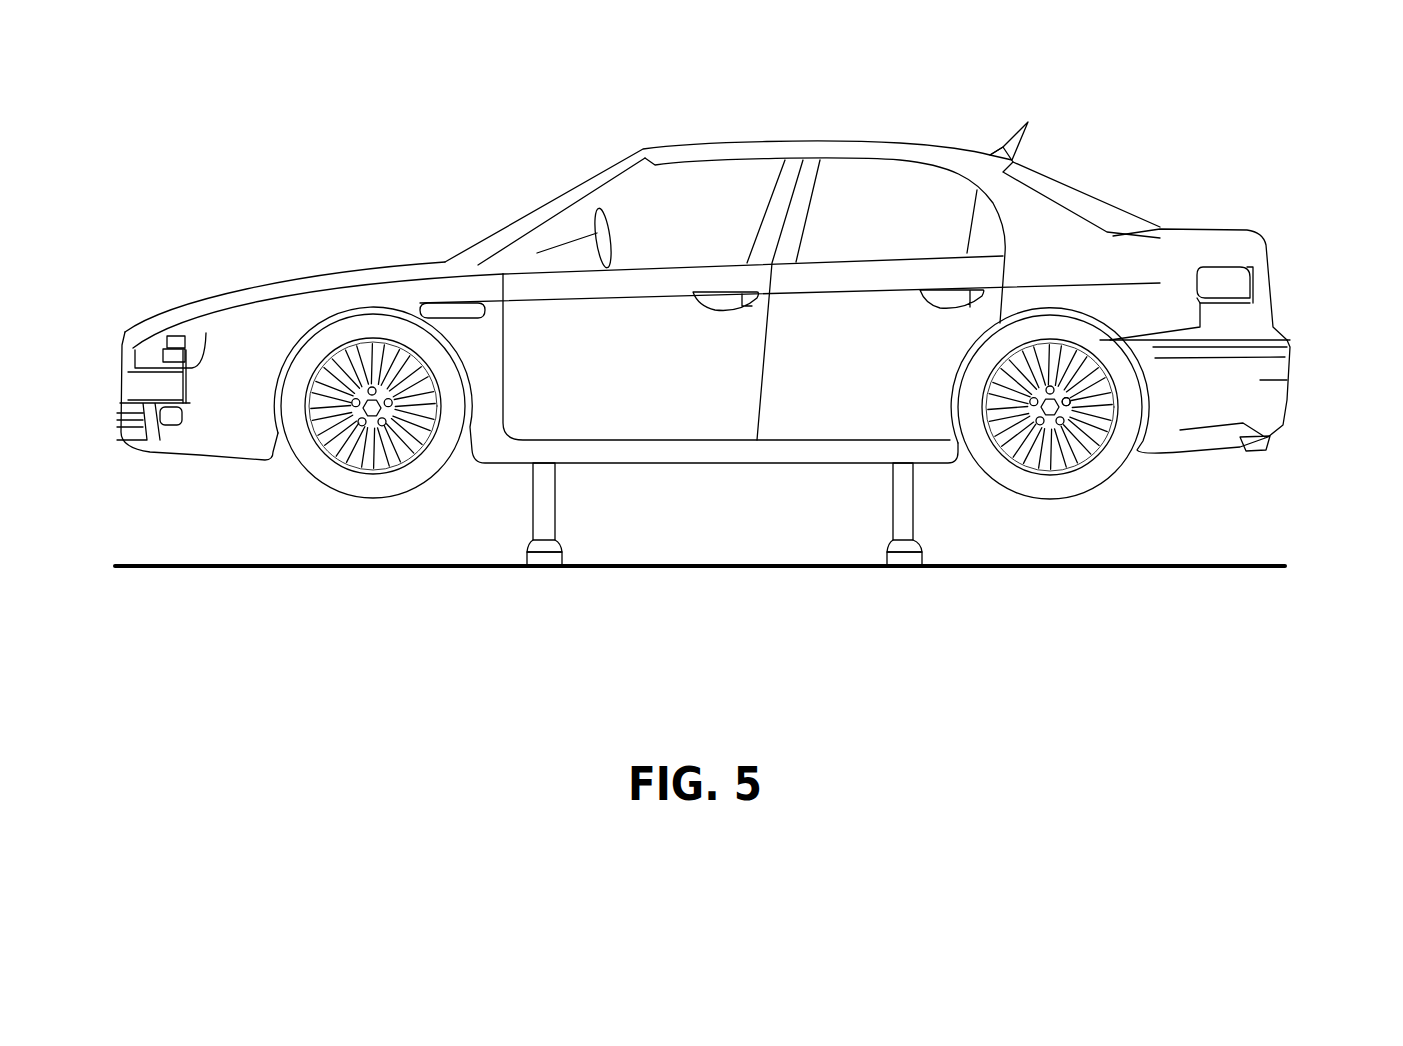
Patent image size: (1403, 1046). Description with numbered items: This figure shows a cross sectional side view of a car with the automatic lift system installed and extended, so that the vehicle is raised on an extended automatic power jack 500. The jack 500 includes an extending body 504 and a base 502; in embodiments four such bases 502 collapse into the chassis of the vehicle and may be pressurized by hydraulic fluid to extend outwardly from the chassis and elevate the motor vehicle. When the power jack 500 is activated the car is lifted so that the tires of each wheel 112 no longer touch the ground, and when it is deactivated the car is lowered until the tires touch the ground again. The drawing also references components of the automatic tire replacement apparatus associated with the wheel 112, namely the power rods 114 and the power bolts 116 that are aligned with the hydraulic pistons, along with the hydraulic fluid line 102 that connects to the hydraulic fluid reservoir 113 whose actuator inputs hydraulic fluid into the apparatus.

The hydraulic fluid line 102 is at (1200, 325).
The wheel 112 is at (333, 477).
The hydraulic fluid reservoir 113 is at (1238, 268).
The power rods 114 is at (1053, 425).
The power bolts 116 is at (1068, 410).
The automatic power jack 500 is at (664, 579).
The base 502 is at (548, 565).
The extending body 504 is at (535, 502).